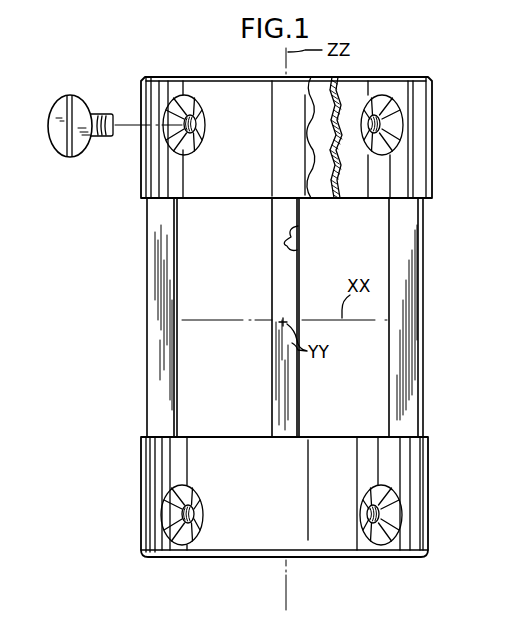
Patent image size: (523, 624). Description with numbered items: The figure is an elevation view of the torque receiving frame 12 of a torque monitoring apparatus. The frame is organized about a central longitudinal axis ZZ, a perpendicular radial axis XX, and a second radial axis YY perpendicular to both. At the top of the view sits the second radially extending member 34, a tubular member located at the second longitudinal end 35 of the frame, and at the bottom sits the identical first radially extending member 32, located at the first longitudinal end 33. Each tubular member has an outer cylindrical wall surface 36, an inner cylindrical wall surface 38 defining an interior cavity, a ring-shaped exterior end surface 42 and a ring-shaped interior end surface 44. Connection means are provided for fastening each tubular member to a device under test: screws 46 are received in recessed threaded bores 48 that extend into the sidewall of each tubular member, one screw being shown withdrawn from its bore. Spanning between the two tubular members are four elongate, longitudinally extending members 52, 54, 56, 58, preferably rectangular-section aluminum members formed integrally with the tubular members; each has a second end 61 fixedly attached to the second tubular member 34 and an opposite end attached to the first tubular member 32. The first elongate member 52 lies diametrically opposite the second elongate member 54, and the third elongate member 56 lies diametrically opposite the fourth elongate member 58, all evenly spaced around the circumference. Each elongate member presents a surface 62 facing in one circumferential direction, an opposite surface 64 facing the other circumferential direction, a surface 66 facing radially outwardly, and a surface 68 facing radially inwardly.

The torque receiving frame 12 is at (116, 63).
The first radially extending member 32 is at (433, 487).
The first longitudinal end 33 is at (417, 558).
The second radially extending member 34 is at (444, 81).
The second longitudinal end 35 is at (419, 76).
The outer cylindrical wall surface 36 is at (432, 143).
The inner cylindrical wall surface 38 is at (333, 78).
The exterior end surface 42 is at (217, 77).
The interior end surface 44 is at (233, 199).
The screw 46 is at (105, 137).
The recessed threaded bore 48 is at (188, 116).
The first elongate longitudinally extending member 52 is at (268, 353).
The second elongate longitudinally extending member 54 is at (306, 234).
The third elongate longitudinally extending member 56 is at (145, 351).
The fourth elongate longitudinally extending member 58 is at (382, 371).
The second end 61 is at (425, 204).
The axially and radially extending surface 62 is at (272, 298).
The axially and radially extending surface 64 is at (155, 325).
The axially and circumferentially extending surface 66 is at (423, 381).
The axially and circumferentially extending surface 68 is at (178, 270).